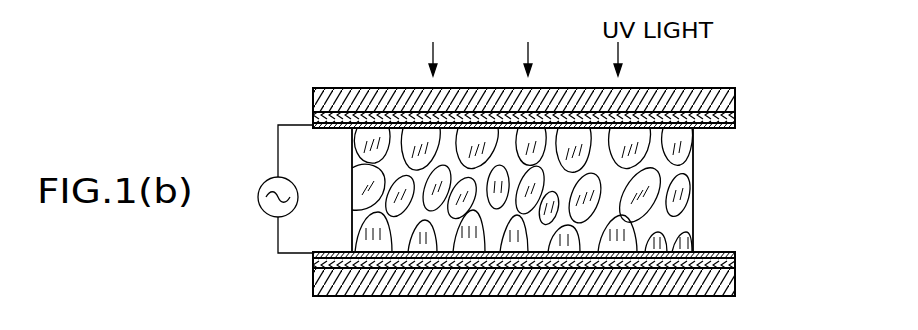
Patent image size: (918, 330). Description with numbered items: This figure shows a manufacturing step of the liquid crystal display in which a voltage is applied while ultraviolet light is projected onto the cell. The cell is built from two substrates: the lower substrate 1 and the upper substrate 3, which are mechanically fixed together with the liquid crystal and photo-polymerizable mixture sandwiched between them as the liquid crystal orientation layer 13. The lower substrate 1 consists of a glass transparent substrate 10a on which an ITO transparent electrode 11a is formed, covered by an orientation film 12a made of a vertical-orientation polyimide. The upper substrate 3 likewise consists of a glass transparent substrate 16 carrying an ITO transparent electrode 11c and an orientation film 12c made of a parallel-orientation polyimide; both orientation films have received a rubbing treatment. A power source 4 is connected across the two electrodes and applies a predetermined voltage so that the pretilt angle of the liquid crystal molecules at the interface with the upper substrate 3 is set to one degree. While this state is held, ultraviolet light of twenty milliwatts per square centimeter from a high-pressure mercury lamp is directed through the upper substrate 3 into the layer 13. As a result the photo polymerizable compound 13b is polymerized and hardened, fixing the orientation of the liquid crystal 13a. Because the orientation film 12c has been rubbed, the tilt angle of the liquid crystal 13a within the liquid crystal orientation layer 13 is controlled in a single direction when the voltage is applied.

The substrate 1 is at (601, 280).
The substrate 3 is at (590, 122).
The power source 4 is at (264, 220).
The transparent substrate 10a is at (735, 287).
The transparent electrode 11a is at (735, 265).
The orientation film 12a is at (735, 256).
The transparent electrode 11c is at (735, 118).
The orientation film 12c is at (735, 127).
The transparent substrate 16 is at (735, 96).
The liquid crystal orientation layer 13 is at (607, 190).
The liquid crystal 13a is at (660, 228).
The photo polymerizable compound 13b is at (665, 178).